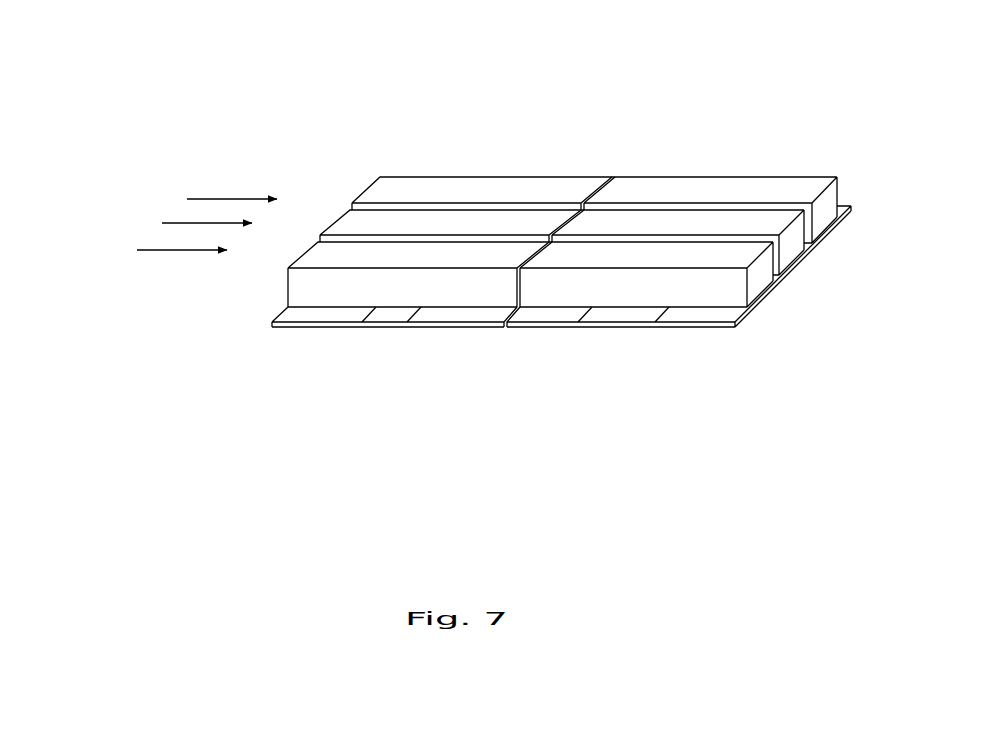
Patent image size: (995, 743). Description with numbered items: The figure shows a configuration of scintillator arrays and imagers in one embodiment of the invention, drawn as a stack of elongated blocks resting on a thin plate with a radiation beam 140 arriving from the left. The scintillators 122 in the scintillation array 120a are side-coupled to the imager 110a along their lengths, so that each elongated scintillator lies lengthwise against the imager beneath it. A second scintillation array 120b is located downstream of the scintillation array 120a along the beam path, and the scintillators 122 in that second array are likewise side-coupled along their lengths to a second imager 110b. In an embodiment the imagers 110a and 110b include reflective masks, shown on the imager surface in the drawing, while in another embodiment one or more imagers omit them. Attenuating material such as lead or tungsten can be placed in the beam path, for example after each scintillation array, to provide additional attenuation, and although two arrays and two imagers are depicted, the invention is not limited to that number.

The radiation beam 140 is at (92, 213).
The scintillators 122 is at (763, 165).
The scintillation array 120a is at (378, 176).
The second scintillation array 120b is at (673, 176).
The imager 110a is at (272, 326).
The second imager 110b is at (749, 319).